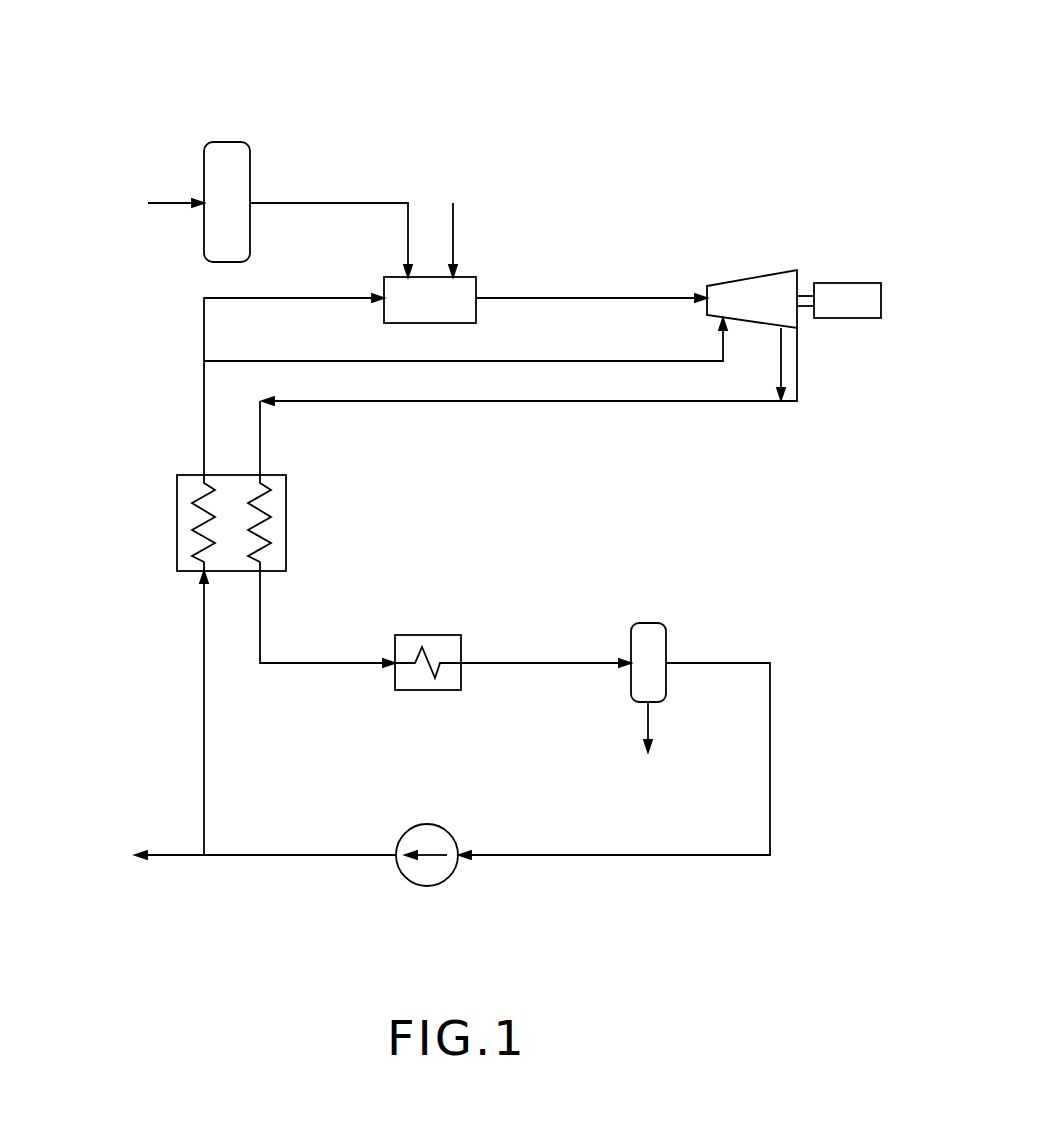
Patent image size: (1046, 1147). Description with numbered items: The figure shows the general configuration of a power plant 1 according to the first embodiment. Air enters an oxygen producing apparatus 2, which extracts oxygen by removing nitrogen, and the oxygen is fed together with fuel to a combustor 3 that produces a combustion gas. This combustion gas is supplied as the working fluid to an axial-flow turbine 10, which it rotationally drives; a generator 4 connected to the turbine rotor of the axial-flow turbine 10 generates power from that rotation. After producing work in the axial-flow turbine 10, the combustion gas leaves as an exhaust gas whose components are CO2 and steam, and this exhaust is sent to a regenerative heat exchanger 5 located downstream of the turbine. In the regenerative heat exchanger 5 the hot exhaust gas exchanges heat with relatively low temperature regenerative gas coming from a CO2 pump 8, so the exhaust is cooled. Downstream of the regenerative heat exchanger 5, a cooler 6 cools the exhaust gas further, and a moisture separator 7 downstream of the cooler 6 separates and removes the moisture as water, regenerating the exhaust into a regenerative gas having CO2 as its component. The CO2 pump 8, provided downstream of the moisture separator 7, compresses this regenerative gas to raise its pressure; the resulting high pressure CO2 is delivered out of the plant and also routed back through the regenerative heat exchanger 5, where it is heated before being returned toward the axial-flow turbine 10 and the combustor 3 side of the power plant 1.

The power plant 1 is at (724, 104).
The oxygen producing apparatus 2 is at (228, 142).
The combustor 3 is at (477, 277).
The generator 4 is at (850, 283).
The regenerative heat exchanger 5 is at (286, 519).
The cooler 6 is at (433, 635).
The moisture separator 7 is at (648, 623).
The CO2 pump 8 is at (430, 824).
The axial-flow turbine 10 is at (752, 275).